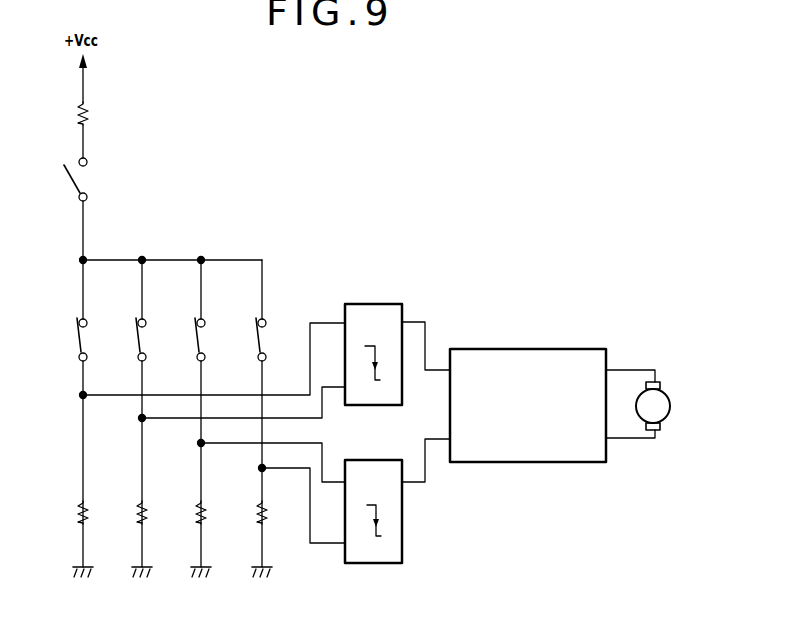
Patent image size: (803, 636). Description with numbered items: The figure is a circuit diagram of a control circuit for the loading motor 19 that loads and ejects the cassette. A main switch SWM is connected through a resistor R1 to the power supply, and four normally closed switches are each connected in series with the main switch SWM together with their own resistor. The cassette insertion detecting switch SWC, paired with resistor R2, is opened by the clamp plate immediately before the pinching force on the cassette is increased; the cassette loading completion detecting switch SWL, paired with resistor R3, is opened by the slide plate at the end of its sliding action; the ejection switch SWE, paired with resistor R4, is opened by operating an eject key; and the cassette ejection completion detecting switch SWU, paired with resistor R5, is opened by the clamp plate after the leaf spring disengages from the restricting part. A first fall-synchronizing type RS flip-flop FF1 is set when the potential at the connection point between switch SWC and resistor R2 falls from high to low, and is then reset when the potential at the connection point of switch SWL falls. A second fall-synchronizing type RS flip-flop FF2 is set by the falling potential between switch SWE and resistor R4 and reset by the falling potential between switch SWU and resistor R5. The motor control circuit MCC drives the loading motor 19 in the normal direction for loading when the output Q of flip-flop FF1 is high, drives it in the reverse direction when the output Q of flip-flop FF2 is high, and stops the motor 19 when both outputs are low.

The resistor R1 is at (91, 112).
The main switch SWM is at (86, 176).
The cassette insertion detecting switch SWC is at (88, 338).
The cassette loading completion detecting switch SWL is at (147, 338).
The ejection switch SWE is at (206, 338).
The cassette ejection completion detecting switch SWU is at (267, 338).
The resistor R2 is at (90, 513).
The resistor R3 is at (149, 513).
The resistor R4 is at (208, 513).
The resistor R5 is at (269, 513).
The first fall-synchronizing type RS flip-flop FF1 is at (375, 304).
The second fall-synchronizing type RS flip-flop FF2 is at (374, 460).
The motor control circuit MCC is at (572, 349).
The loading motor 19 is at (668, 392).